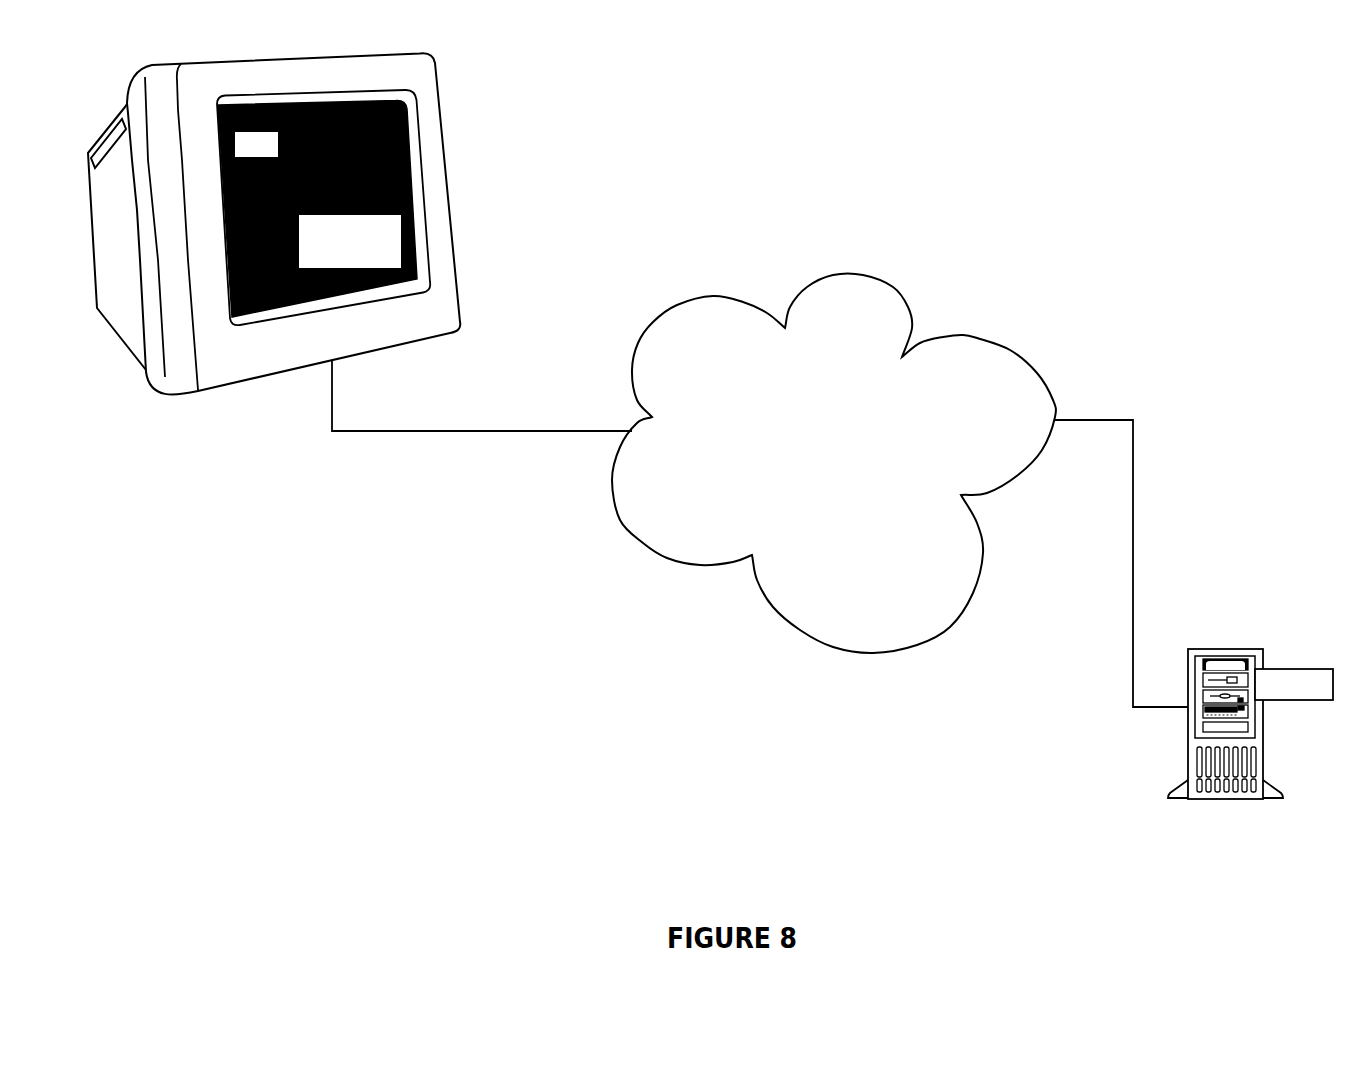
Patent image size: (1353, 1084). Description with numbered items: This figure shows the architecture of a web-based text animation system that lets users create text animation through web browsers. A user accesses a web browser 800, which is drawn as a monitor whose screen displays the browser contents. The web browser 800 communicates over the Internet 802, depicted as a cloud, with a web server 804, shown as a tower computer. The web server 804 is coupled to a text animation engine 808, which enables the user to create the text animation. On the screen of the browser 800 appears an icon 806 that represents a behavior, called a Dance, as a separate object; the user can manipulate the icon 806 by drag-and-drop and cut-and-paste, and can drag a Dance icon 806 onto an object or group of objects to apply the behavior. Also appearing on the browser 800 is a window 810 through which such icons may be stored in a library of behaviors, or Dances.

The web browser 800 is at (274, 223).
The Internet 802 is at (834, 464).
The web server 804 is at (1222, 802).
The icon 806 is at (256, 144).
The text animation engine 808 is at (1294, 684).
The window 810 is at (350, 241).